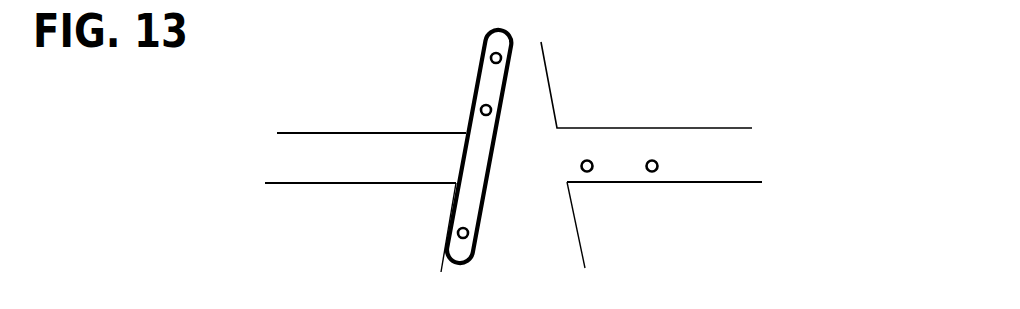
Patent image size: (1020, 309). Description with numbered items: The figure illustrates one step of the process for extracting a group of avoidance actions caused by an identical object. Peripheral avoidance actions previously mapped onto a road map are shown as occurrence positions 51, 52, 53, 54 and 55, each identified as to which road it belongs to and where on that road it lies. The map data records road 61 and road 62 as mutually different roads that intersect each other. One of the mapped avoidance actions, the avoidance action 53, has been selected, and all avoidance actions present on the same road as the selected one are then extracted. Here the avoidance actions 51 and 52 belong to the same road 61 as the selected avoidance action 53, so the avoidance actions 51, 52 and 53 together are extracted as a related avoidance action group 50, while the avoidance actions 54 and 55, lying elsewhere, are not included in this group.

The related avoidance action group 50 is at (452, 199).
The avoidance action 51 is at (502, 57).
The avoidance action 52 is at (492, 109).
The avoidance action 53 is at (449, 245).
The avoidance action 54 is at (593, 168).
The avoidance action 55 is at (658, 168).
The road 61 is at (584, 256).
The road 62 is at (300, 184).